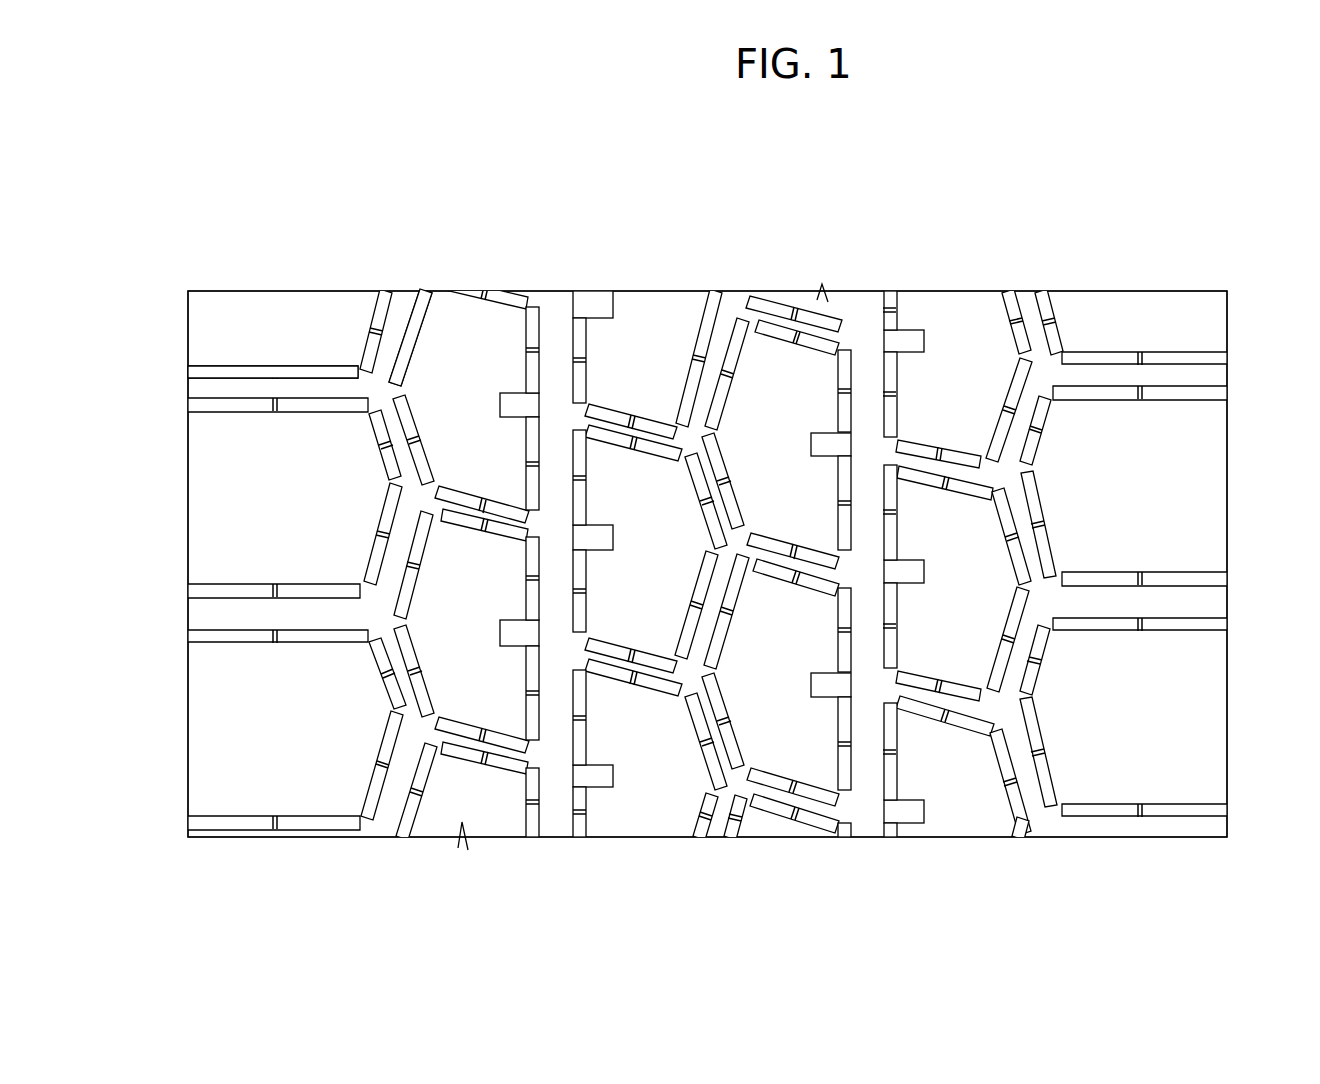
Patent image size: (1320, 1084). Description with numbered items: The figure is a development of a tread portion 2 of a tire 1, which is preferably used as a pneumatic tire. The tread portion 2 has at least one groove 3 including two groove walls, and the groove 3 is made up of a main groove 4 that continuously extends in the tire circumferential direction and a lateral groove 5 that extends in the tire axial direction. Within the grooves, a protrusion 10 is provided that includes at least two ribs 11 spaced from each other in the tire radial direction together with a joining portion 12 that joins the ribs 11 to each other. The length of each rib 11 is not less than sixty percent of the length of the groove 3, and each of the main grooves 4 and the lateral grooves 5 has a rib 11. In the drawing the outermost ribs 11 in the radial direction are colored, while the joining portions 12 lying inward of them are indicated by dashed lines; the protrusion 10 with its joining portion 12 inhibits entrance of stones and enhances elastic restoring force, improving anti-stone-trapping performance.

The tire 1 is at (1098, 264).
The tread portion 2 is at (497, 265).
The groove 3 is at (428, 236).
The main groove 4 is at (402, 316).
The lateral groove 5 is at (302, 392).
The protrusion 10 is at (876, 627).
The rib 11 is at (582, 720).
The joining portion 12 is at (586, 718).